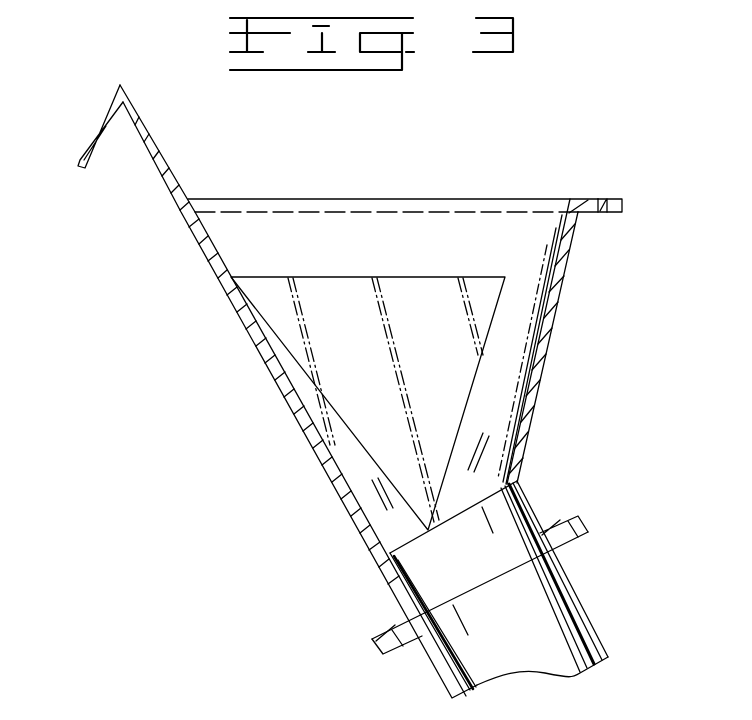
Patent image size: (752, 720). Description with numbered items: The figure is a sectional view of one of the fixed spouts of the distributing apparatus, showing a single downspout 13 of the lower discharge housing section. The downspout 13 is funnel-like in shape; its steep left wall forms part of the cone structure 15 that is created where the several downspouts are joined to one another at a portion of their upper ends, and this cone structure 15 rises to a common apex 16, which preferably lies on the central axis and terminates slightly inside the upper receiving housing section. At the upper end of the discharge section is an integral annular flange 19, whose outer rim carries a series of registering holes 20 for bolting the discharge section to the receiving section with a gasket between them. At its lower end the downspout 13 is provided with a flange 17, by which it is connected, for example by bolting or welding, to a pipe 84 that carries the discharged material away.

The downspout 13 is at (547, 355).
The cone structure 15 is at (150, 145).
The apex 16 is at (120, 83).
The flange 17 is at (563, 516).
The annular flange 19 is at (622, 211).
The registering holes 20 is at (599, 200).
The pipe 84 is at (583, 613).